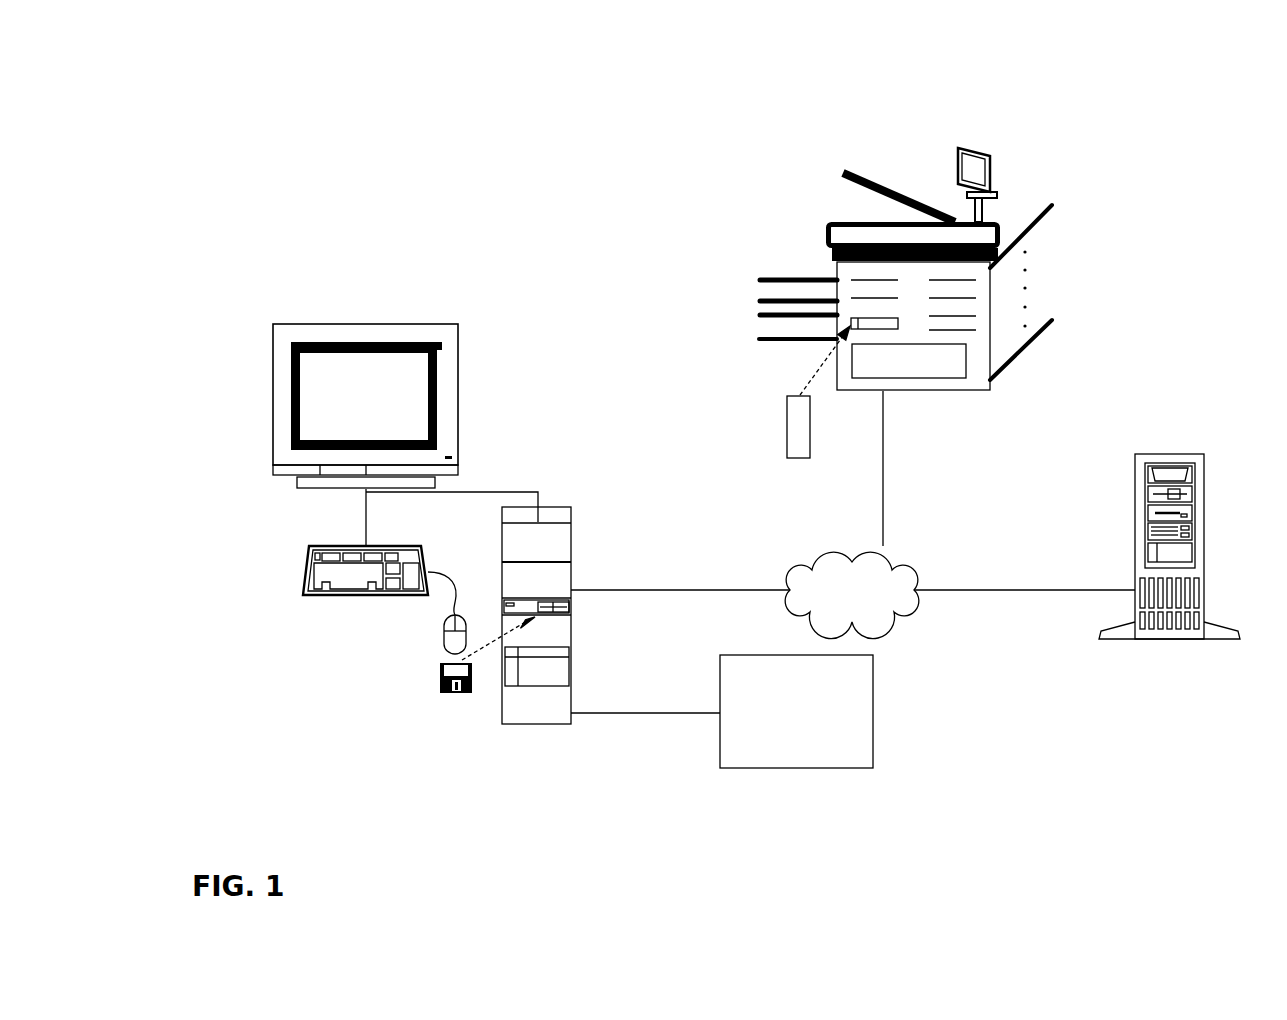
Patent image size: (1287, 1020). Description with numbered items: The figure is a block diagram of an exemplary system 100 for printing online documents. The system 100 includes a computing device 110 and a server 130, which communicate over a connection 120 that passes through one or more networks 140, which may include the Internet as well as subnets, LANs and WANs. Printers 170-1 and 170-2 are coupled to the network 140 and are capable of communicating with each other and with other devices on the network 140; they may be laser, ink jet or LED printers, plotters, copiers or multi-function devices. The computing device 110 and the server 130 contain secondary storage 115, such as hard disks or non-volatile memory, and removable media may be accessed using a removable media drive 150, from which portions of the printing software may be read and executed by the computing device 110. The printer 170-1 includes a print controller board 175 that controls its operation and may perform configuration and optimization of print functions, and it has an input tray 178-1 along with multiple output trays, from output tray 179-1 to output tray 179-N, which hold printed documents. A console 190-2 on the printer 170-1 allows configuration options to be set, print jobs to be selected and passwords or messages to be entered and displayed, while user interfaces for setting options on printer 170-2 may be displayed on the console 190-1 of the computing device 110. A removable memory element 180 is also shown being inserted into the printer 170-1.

The system 100 is at (213, 54).
The computing device 110 is at (555, 615).
The secondary storage 115 is at (569, 668).
The connection 120 is at (643, 468).
The server 130 is at (1169, 530).
The network 140 is at (870, 601).
The removable media drive 150 is at (487, 668).
The printer 170-1 is at (940, 249).
The printer 170-2 is at (796, 711).
The print controller board 175 is at (909, 361).
The input tray 178-1 is at (774, 326).
The output tray 179-1 is at (1079, 350).
The output tray 179-N is at (1077, 228).
The removable memory card 180 is at (820, 392).
The console 190-1 is at (272, 358).
The console 190-2 is at (997, 165).